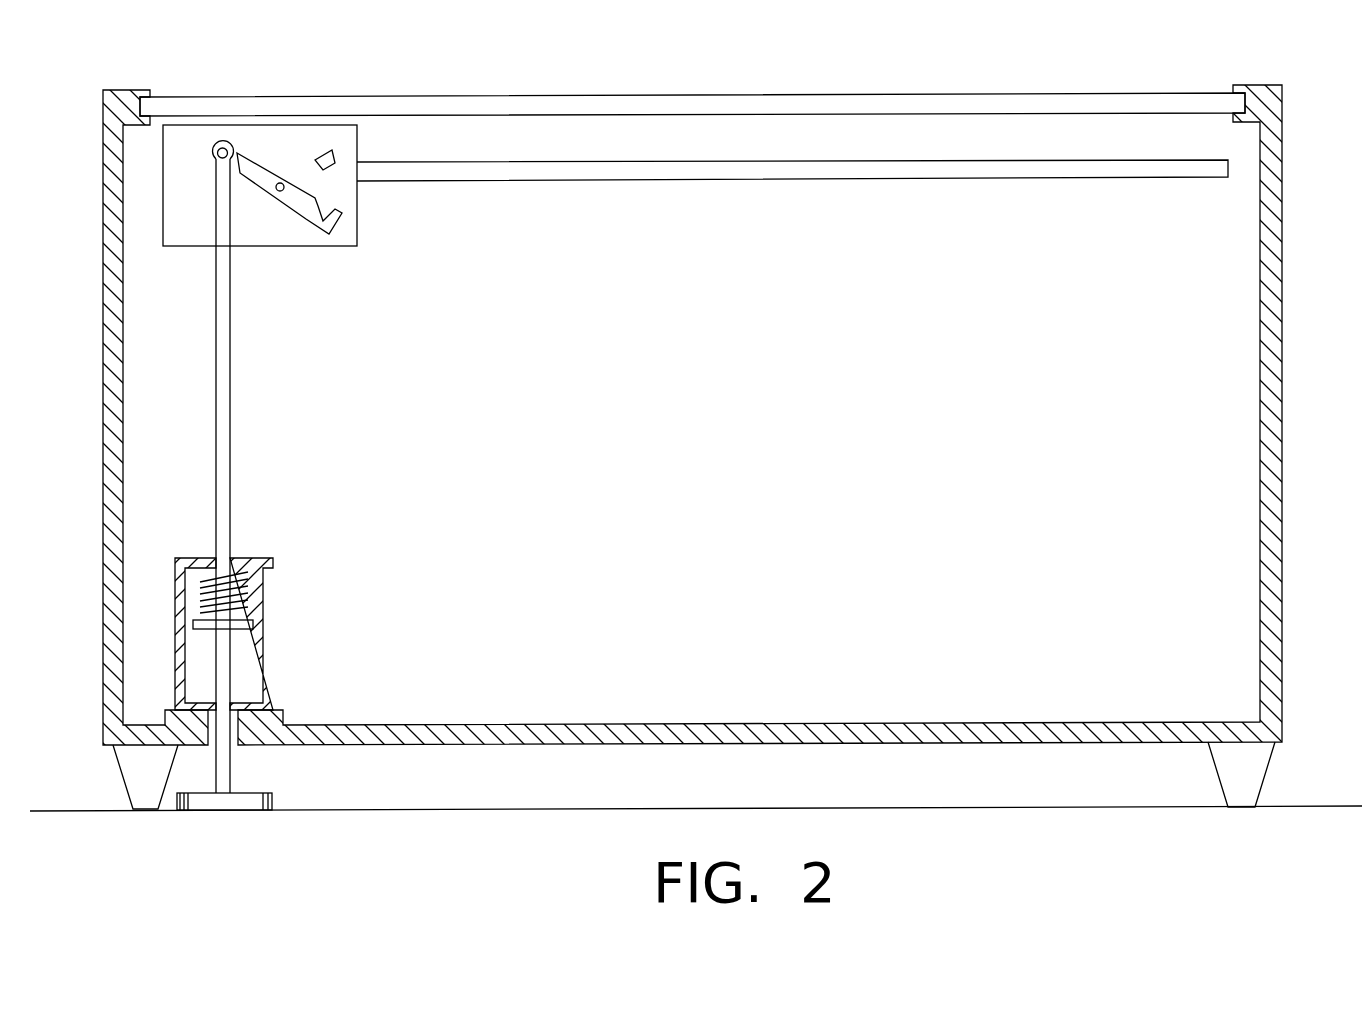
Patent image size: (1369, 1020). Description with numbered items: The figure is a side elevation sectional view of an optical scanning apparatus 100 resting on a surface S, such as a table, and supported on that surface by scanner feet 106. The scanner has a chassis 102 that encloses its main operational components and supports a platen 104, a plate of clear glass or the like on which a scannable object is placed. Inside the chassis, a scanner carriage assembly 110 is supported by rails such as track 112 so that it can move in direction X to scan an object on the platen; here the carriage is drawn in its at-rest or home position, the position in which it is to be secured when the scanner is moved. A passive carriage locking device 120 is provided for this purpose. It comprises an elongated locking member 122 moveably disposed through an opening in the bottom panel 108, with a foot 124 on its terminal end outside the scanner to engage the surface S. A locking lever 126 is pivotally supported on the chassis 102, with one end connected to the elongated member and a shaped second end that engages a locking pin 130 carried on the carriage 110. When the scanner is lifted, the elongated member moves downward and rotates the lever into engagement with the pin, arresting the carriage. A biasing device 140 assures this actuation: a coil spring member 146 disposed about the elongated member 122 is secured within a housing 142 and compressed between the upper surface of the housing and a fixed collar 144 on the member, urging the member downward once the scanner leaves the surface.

The optical scanning apparatus 100 is at (696, 72).
The chassis 102 is at (108, 183).
The platen 104 is at (603, 110).
The scanner feet 106 is at (122, 778).
The bottom panel 108 is at (829, 723).
The scanner carriage assembly 110 is at (356, 199).
The track 112 is at (710, 168).
The carriage locking device 120 is at (487, 392).
The elongated locking member 122 is at (224, 466).
The foot 124 is at (272, 790).
The locking lever 126 is at (251, 168).
The locking pin 130 is at (332, 153).
The biasing device 140 is at (280, 563).
The housing 142 is at (271, 667).
The fixed collar 144 is at (254, 625).
The spring member 146 is at (246, 582).
The surface S is at (1316, 807).
The direction X is at (528, 223).